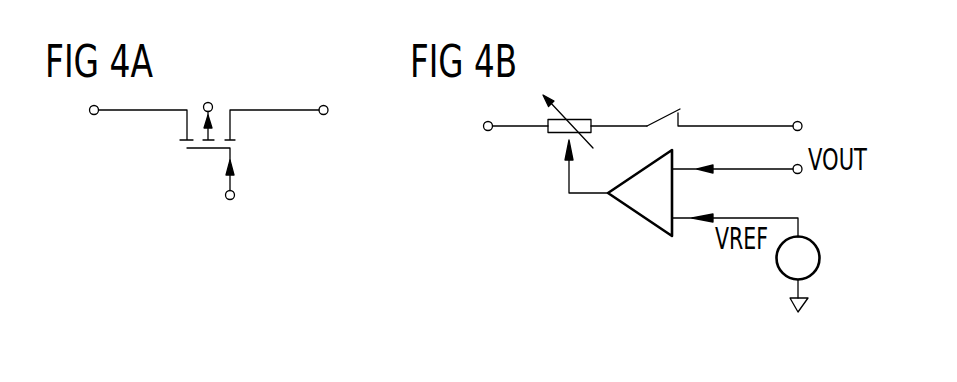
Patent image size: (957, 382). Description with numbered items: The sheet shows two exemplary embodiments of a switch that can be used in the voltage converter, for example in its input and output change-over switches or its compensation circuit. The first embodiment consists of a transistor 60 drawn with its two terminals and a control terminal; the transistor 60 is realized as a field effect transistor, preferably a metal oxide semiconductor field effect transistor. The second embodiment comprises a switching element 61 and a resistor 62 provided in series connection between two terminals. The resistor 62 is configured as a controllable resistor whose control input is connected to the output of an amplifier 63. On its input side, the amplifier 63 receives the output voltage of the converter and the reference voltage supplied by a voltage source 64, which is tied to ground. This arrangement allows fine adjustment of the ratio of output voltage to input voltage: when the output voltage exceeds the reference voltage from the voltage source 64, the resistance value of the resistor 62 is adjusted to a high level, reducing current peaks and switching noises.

In FIG. 4A, the transistor 60 is at (198, 150).
In FIG. 4B, the switching element 61 is at (660, 113).
In FIG. 4B, the resistor 62 is at (578, 118).
In FIG. 4B, the amplifier 63 is at (638, 217).
In FIG. 4B, the voltage source 64 is at (820, 257).